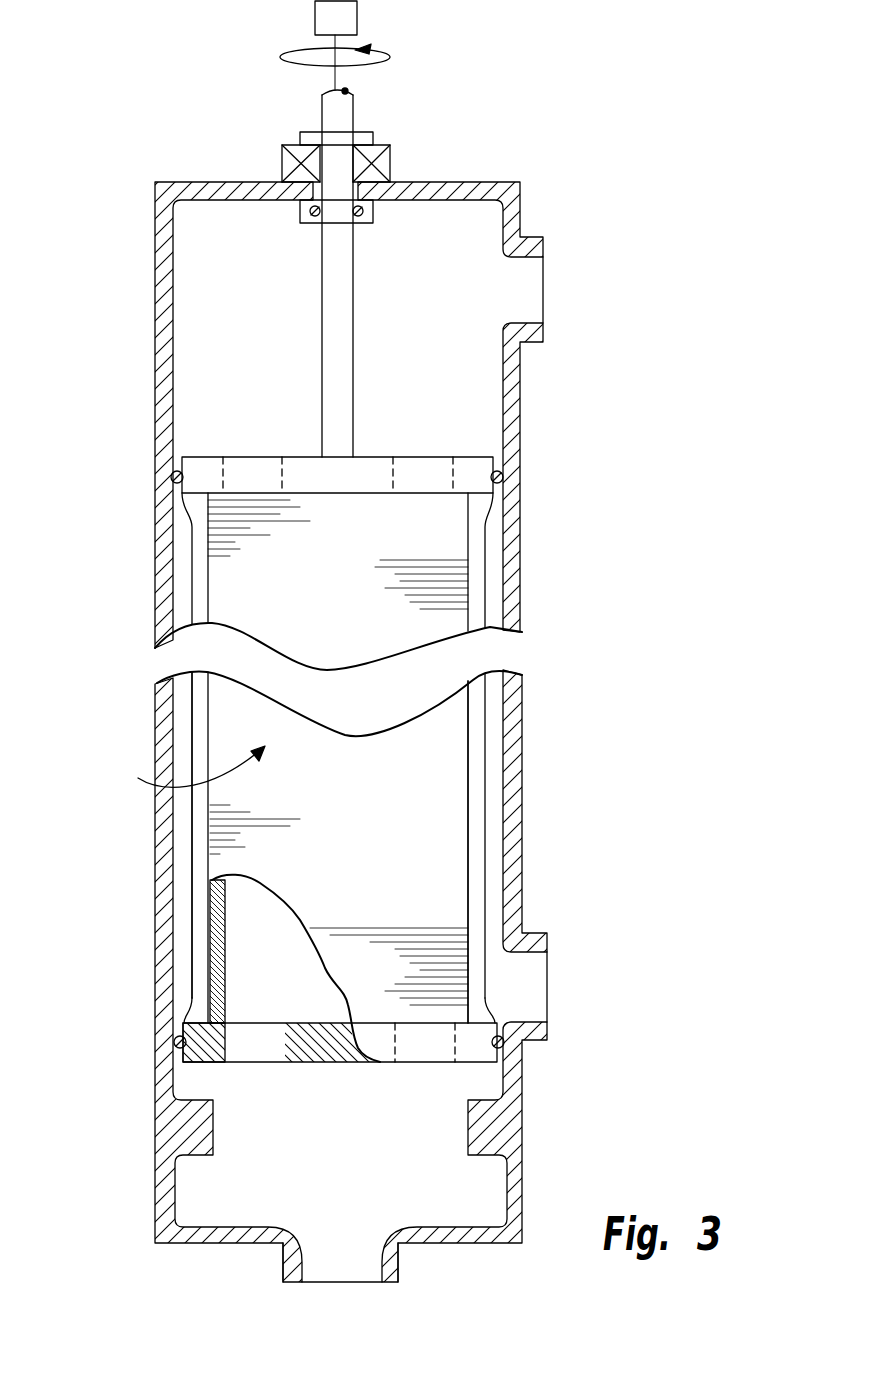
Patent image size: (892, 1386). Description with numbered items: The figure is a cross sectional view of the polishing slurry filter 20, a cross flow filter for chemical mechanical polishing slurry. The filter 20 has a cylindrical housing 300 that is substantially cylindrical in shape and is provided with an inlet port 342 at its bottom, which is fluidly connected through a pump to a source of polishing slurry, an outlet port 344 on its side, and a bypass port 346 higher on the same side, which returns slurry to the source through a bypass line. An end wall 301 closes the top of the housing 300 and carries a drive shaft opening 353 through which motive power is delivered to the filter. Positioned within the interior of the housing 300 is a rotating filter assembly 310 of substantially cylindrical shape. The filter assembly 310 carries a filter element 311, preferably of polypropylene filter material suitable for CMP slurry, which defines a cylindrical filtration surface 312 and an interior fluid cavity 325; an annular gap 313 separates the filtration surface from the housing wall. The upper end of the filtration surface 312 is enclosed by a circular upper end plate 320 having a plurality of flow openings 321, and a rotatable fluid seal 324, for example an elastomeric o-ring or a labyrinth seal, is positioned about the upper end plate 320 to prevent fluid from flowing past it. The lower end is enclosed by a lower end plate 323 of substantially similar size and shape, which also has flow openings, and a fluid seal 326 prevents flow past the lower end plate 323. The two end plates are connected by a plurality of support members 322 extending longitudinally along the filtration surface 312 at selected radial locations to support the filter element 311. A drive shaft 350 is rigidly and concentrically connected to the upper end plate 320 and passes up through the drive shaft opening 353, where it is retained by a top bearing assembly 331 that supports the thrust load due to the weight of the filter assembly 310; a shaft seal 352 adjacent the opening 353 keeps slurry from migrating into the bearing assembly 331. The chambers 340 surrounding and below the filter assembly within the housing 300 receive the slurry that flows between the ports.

The polishing slurry filter 20 is at (617, 80).
The cylindrical housing 300 is at (523, 807).
The housing end wall 301 is at (520, 181).
The rotating filter assembly 310 is at (183, 770).
The filter element 311 is at (387, 857).
The cylindrical filtration surface 312 is at (470, 866).
The cylinder outer wall gap 313 is at (188, 890).
The upper end plate 320 is at (483, 494).
The flow openings 321 is at (247, 483).
The support members 322 is at (481, 744).
The lower end plate 323 is at (315, 1056).
The fluid seal 324 is at (173, 477).
The interior fluid cavity 325 is at (297, 979).
The fluid seal 326 is at (175, 1044).
The top bearing assembly 331 is at (413, 157).
The housing chamber 340 is at (280, 409).
The inlet port 342 is at (325, 1281).
The outlet port 344 is at (547, 968).
The bypass port 346 is at (543, 293).
The drive shaft 350 is at (342, 90).
The shaft seal 352 is at (373, 218).
The drive shaft opening 353 is at (303, 213).